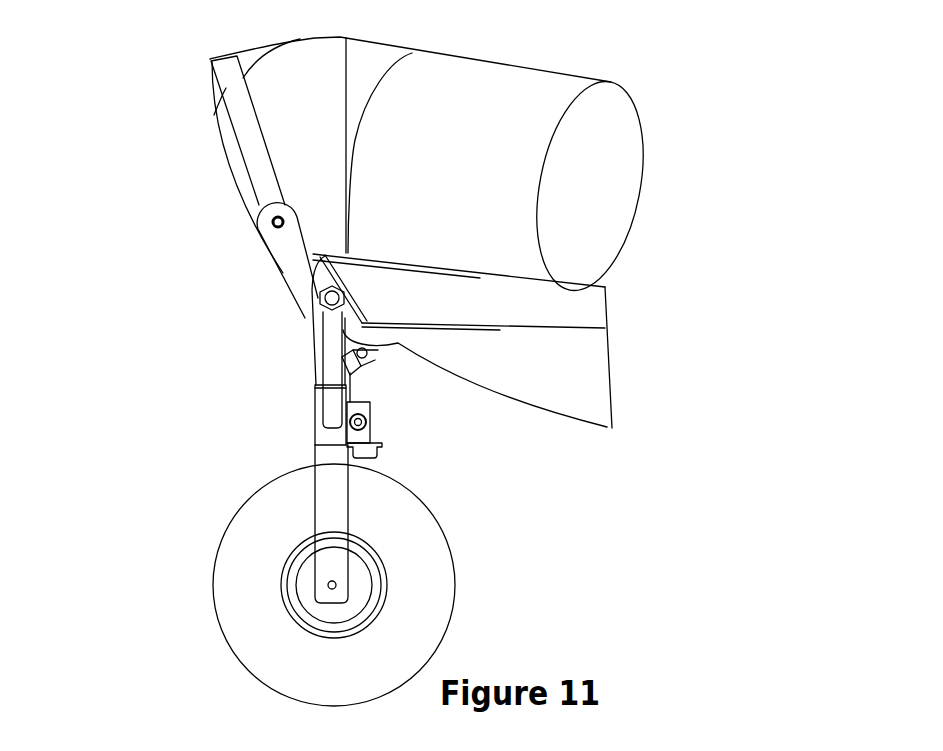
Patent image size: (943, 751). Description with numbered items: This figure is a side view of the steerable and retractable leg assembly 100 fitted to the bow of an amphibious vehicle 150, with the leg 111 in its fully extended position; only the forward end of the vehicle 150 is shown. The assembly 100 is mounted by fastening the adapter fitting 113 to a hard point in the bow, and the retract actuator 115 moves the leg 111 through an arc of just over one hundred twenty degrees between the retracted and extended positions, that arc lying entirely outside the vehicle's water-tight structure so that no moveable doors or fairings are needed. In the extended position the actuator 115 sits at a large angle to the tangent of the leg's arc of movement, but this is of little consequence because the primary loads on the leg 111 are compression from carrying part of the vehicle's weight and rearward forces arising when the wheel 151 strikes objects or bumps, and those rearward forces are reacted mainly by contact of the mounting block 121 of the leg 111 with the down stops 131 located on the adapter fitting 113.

The steerable and retractable leg assembly 100 is at (148, 316).
The leg 111 is at (316, 372).
The adapter fitting 113 is at (283, 277).
The retract actuator 115 is at (255, 159).
The mounting block 121 is at (312, 383).
The down stops 131 is at (358, 371).
The amphibious vehicle 150 is at (530, 80).
The wheel 151 is at (233, 520).